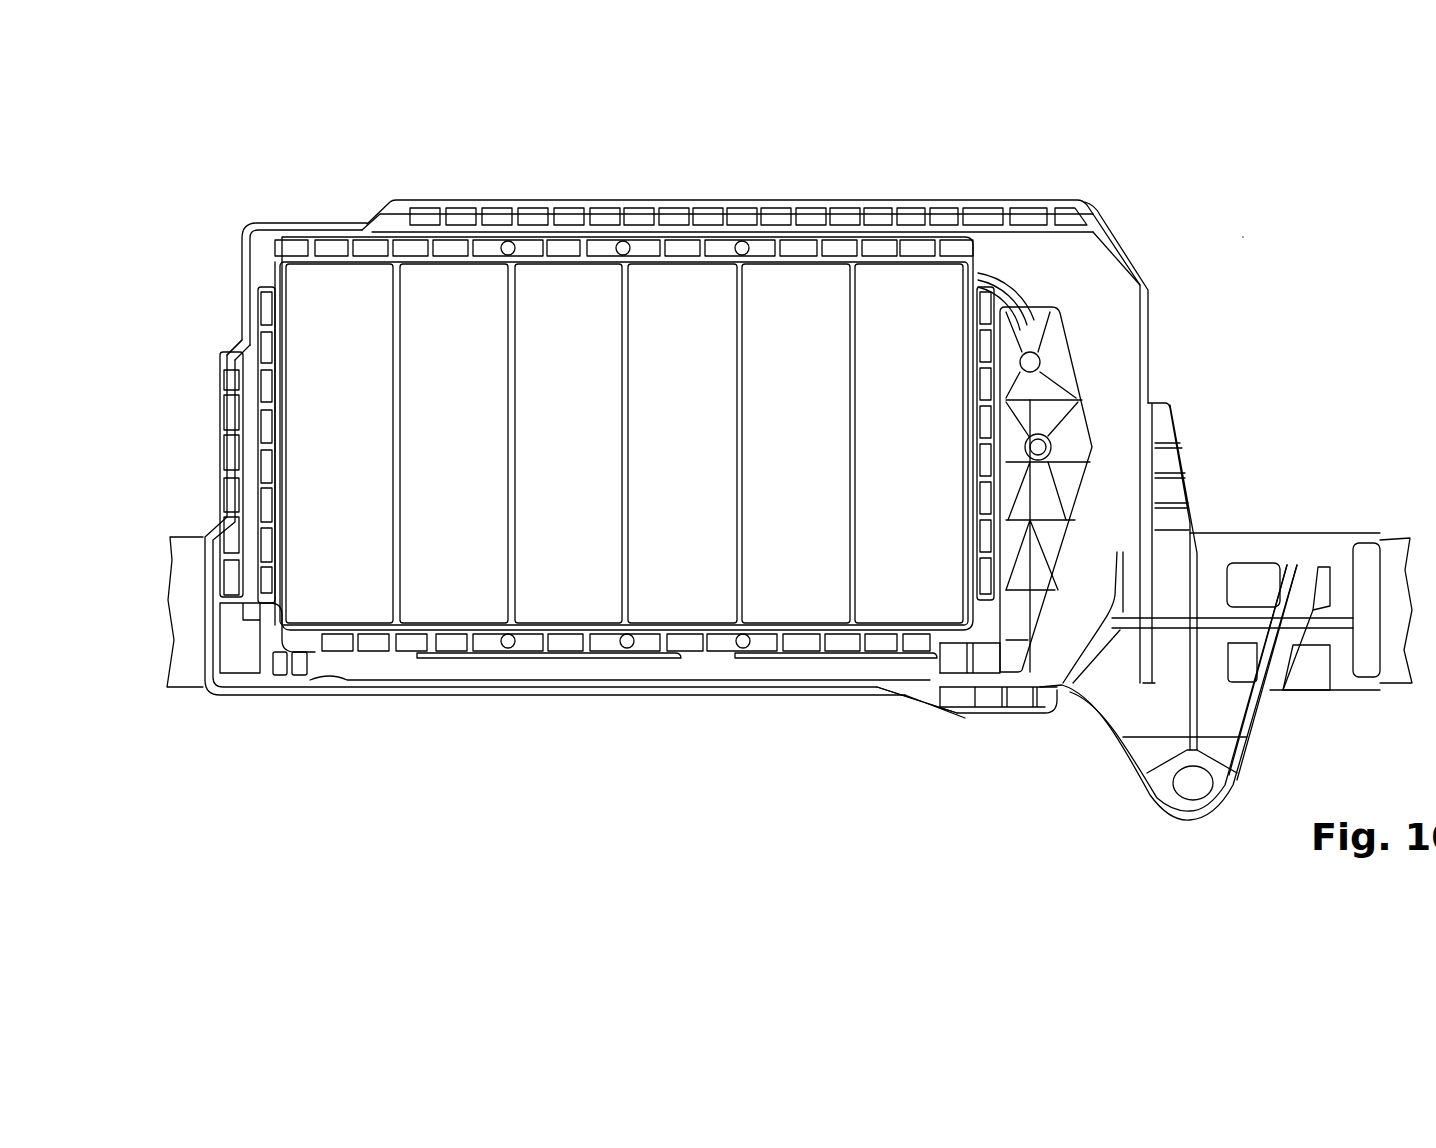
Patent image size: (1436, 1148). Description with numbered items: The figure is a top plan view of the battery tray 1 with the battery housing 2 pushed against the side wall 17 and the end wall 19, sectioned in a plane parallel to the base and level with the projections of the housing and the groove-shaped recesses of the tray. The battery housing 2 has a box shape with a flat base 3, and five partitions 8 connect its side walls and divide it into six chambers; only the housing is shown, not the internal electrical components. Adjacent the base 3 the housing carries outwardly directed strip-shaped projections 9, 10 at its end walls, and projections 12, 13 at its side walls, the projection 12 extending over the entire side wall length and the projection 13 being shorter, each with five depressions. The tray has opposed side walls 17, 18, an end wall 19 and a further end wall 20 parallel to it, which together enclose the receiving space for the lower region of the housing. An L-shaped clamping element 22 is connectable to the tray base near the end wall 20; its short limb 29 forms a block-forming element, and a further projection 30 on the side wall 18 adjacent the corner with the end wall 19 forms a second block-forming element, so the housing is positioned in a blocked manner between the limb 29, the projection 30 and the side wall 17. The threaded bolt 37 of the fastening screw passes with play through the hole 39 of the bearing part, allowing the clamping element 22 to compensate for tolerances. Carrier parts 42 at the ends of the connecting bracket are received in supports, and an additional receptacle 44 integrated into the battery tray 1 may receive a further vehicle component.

The battery tray 1 is at (1243, 237).
The battery housing 2 is at (1033, 278).
The base 3 is at (693, 613).
The partitions 8 is at (402, 578).
The projection 9 is at (972, 282).
The projection 10 is at (260, 457).
The projection 12 is at (353, 238).
The projection 13 is at (402, 652).
The side wall 17 is at (907, 193).
The side wall 18 is at (570, 684).
The end wall 19 is at (218, 322).
The end wall 20 is at (1205, 495).
The clamping element 22 is at (1080, 403).
The short limb 29 is at (927, 667).
The projection 30 is at (303, 652).
The threaded bolt 37 is at (1057, 453).
The hole 39 is at (1055, 443).
The carrier parts 42 is at (187, 677).
The additional receptacle 44 is at (1140, 717).